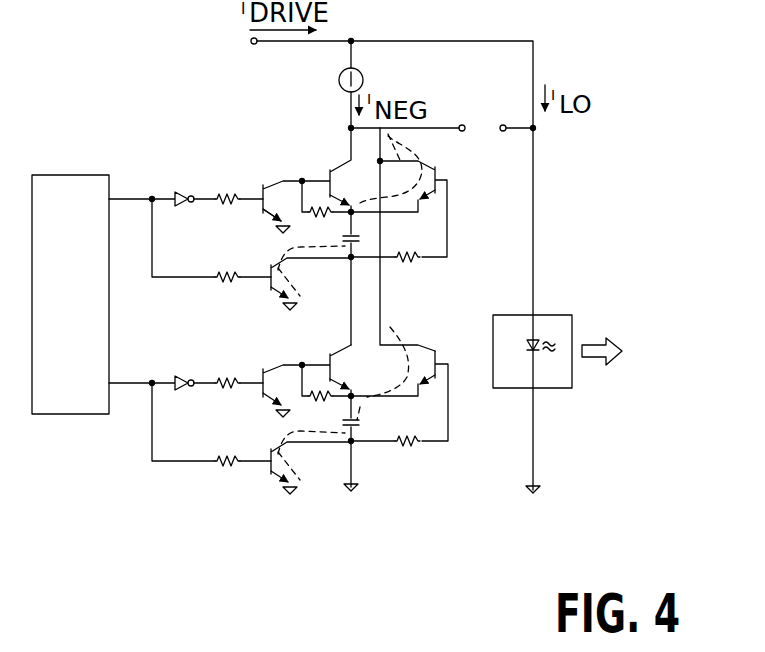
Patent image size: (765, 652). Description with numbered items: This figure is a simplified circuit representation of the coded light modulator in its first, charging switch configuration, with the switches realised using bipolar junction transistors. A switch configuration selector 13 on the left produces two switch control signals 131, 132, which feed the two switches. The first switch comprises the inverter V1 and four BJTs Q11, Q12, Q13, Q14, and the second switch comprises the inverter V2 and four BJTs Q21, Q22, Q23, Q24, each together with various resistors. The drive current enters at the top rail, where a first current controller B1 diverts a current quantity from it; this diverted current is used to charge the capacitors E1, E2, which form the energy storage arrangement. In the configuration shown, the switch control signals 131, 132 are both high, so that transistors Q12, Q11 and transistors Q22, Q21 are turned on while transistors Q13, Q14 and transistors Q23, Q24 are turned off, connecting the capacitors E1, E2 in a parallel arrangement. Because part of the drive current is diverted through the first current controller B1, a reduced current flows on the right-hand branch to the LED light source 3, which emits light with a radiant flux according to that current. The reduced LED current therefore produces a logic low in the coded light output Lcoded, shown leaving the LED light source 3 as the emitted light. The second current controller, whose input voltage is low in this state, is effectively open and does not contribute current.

The switch configuration selector 13 is at (44, 175).
The switch control signal 131 is at (118, 199).
The switch control signal 132 is at (118, 383).
The LED light source 3 is at (560, 315).
The first current controller B1 is at (363, 76).
The BJT Q11 is at (438, 170).
The BJT Q12 is at (271, 288).
The BJT Q13 is at (330, 168).
The BJT Q14 is at (263, 185).
The BJT Q21 is at (435, 351).
The BJT Q22 is at (270, 476).
The BJT Q23 is at (331, 354).
The BJT Q24 is at (263, 369).
The inverter V1 is at (176, 192).
The inverter V2 is at (176, 383).
The capacitor E1 is at (360, 230).
The capacitor E2 is at (360, 430).
The coded light output Lcoded is at (590, 365).